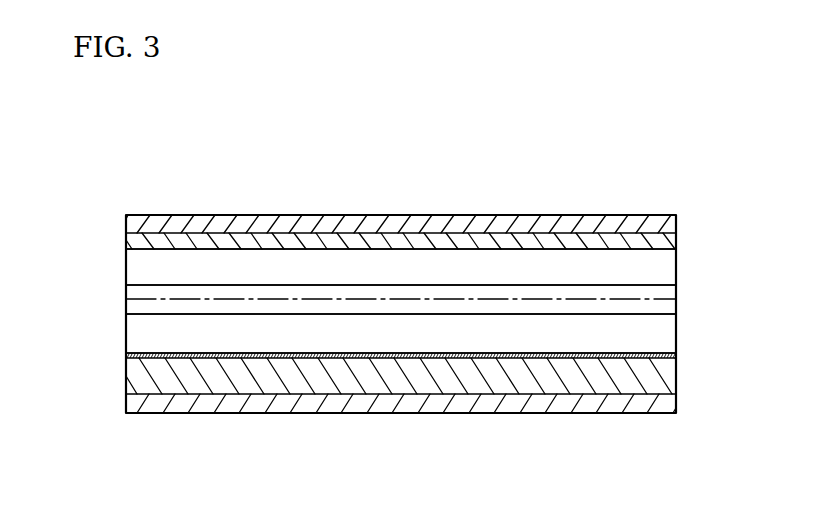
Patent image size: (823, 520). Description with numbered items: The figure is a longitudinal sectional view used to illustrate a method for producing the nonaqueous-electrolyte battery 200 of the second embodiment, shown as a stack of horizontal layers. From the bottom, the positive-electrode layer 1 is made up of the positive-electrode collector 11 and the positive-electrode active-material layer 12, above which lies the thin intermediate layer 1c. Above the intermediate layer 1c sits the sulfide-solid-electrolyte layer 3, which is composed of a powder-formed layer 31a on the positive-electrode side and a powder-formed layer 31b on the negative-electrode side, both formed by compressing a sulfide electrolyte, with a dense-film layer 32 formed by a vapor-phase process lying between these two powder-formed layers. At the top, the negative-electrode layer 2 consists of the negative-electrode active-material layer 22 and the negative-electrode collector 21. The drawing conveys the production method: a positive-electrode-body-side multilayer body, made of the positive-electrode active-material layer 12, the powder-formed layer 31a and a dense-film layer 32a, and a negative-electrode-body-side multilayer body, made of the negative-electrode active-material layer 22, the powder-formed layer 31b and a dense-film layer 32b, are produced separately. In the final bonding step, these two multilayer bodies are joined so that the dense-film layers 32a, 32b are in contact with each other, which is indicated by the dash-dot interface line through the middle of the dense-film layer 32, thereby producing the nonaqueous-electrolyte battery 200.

The nonaqueous-electrolyte battery 200 is at (469, 195).
The negative-electrode layer 2 is at (122, 132).
The negative-electrode collector 21 is at (147, 215).
The negative-electrode active-material layer 22 is at (126, 241).
The sulfide-solid-electrolyte layer 3 is at (764, 247).
The powder-formed layer 31b is at (677, 262).
The dense-film layer 32 is at (677, 300).
The dense-film layer 32b is at (126, 293).
The dense-film layer 32a is at (126, 306).
The powder-formed layer 31a is at (677, 337).
The positive-electrode layer 1 is at (98, 481).
The intermediate layer 1c is at (126, 356).
The positive-electrode active-material layer 12 is at (126, 375).
The positive-electrode collector 11 is at (146, 413).